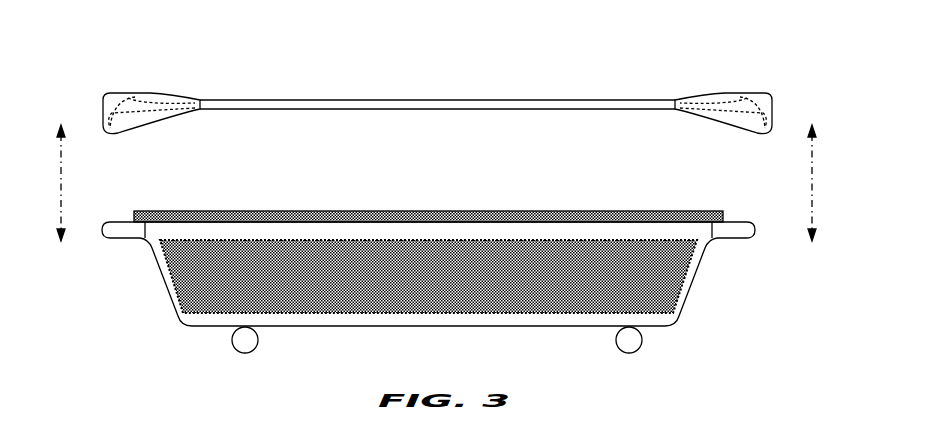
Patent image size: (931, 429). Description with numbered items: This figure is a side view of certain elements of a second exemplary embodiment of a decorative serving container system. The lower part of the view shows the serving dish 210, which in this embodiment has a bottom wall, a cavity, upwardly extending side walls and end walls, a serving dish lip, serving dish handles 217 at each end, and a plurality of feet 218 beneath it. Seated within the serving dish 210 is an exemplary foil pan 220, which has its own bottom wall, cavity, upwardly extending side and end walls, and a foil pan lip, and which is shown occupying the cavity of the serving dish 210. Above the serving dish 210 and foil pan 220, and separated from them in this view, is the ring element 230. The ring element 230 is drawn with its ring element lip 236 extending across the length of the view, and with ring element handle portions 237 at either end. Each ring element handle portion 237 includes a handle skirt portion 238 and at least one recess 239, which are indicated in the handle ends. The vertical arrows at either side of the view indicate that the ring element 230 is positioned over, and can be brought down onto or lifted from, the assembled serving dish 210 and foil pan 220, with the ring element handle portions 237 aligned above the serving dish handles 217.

The serving dish 210 is at (213, 343).
The serving dish handles 217 is at (120, 233).
The feet 218 is at (256, 346).
The foil pan 220 is at (652, 289).
The ring element 230 is at (517, 64).
The ring element lip 236 is at (450, 100).
The ring element handle portions 237 is at (108, 92).
The handle skirt portions 238 is at (130, 119).
The recess 239 is at (137, 98).